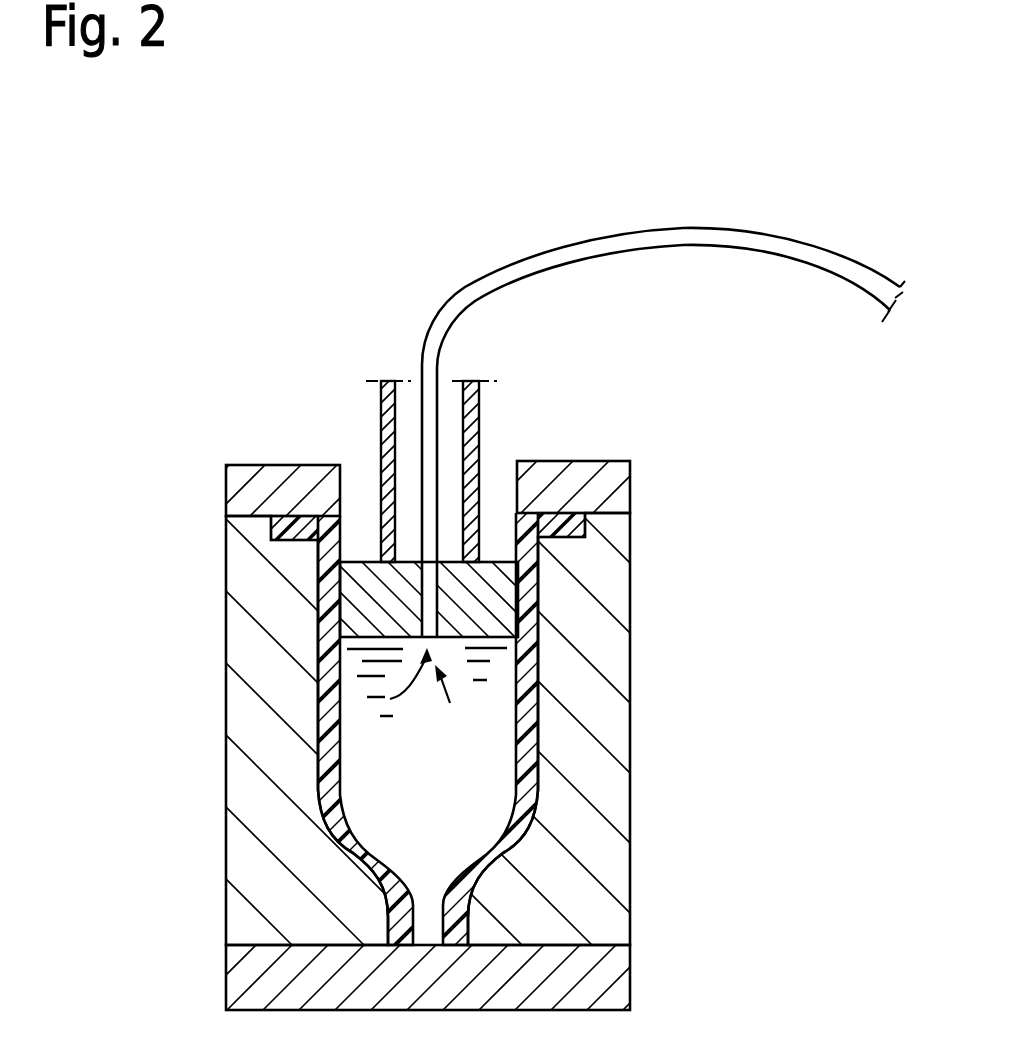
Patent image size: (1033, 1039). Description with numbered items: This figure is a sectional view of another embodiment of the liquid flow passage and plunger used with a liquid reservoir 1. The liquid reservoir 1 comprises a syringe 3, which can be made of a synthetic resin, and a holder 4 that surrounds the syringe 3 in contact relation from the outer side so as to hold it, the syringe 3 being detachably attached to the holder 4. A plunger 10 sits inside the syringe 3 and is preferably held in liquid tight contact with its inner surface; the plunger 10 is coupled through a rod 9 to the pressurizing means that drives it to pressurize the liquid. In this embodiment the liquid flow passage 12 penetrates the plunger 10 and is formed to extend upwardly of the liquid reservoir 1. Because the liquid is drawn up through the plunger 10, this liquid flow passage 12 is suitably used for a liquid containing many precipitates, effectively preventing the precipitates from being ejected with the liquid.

The liquid reservoir 1 is at (633, 602).
The syringe 3 is at (527, 673).
The holder 4 is at (598, 783).
The rod 9 is at (380, 398).
The plunger 10 is at (367, 597).
The liquid flow passage 12 is at (693, 247).